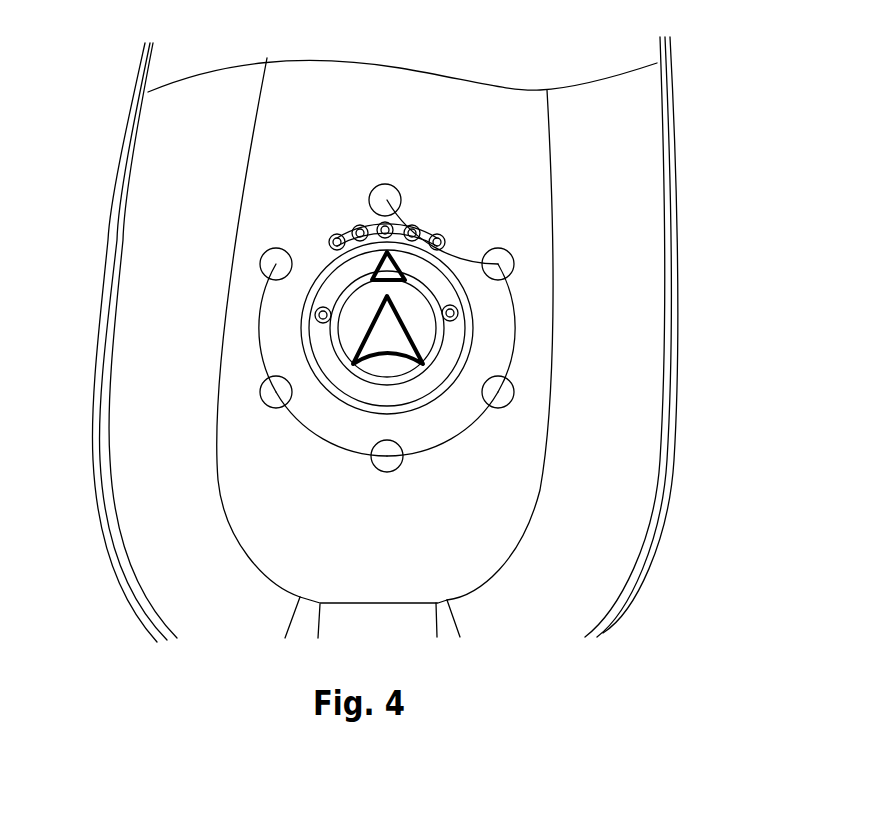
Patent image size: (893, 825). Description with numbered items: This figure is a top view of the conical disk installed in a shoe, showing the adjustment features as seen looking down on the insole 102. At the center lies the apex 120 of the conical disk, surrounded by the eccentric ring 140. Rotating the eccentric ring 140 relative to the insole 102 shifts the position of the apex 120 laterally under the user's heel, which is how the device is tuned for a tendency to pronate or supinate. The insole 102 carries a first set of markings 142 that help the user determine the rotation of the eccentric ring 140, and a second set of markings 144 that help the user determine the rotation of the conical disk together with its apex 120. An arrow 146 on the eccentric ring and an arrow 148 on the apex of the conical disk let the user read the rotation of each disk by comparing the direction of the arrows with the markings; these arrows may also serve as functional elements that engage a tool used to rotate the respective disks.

The insole 102 is at (460, 127).
The apex 120 is at (427, 346).
The eccentric ring 140 is at (328, 277).
The first set of markings 142 is at (356, 233).
The second set of markings 144 is at (402, 467).
The arrow on the eccentric disk 146 is at (405, 270).
The arrow on the apex of the conical disk 148 is at (358, 354).